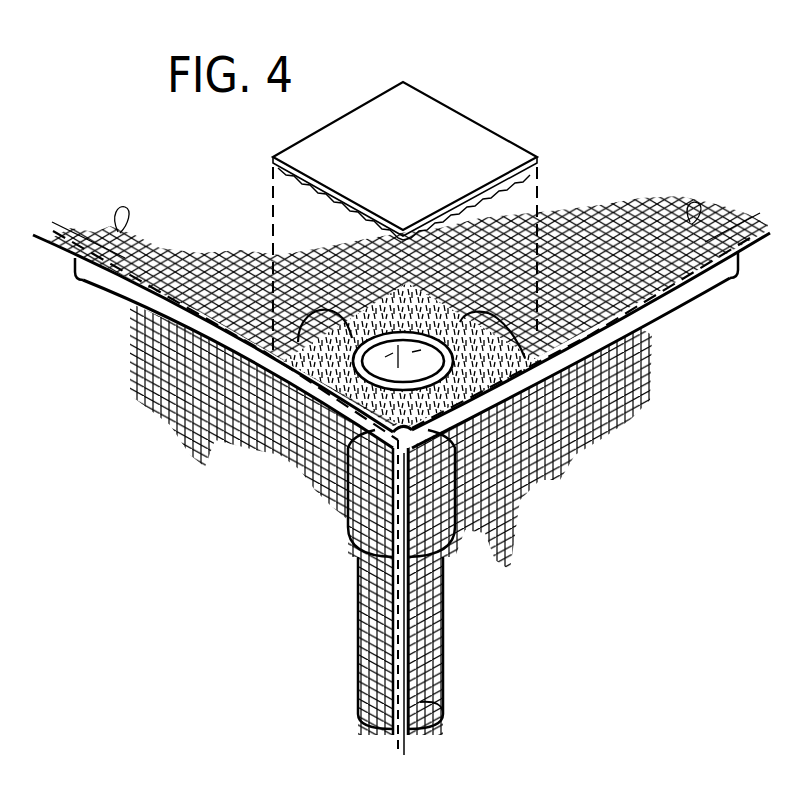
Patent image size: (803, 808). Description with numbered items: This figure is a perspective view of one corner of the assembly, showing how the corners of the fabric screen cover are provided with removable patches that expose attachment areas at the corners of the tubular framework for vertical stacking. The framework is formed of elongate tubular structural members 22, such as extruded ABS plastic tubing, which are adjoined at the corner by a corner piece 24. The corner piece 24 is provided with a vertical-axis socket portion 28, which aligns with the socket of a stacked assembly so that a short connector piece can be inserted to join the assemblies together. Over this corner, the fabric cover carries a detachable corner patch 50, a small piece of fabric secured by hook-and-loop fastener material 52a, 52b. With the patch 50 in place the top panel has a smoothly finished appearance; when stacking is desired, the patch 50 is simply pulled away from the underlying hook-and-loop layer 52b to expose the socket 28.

The tubular structural member 22 is at (367, 633).
The corner piece 24 is at (447, 527).
The vertical-axis socket portion 28 is at (422, 368).
The detachable corner patch 50 is at (458, 128).
The hook-and-loop fastener material 52a is at (510, 190).
The hook-and-loop layer 52b is at (483, 367).